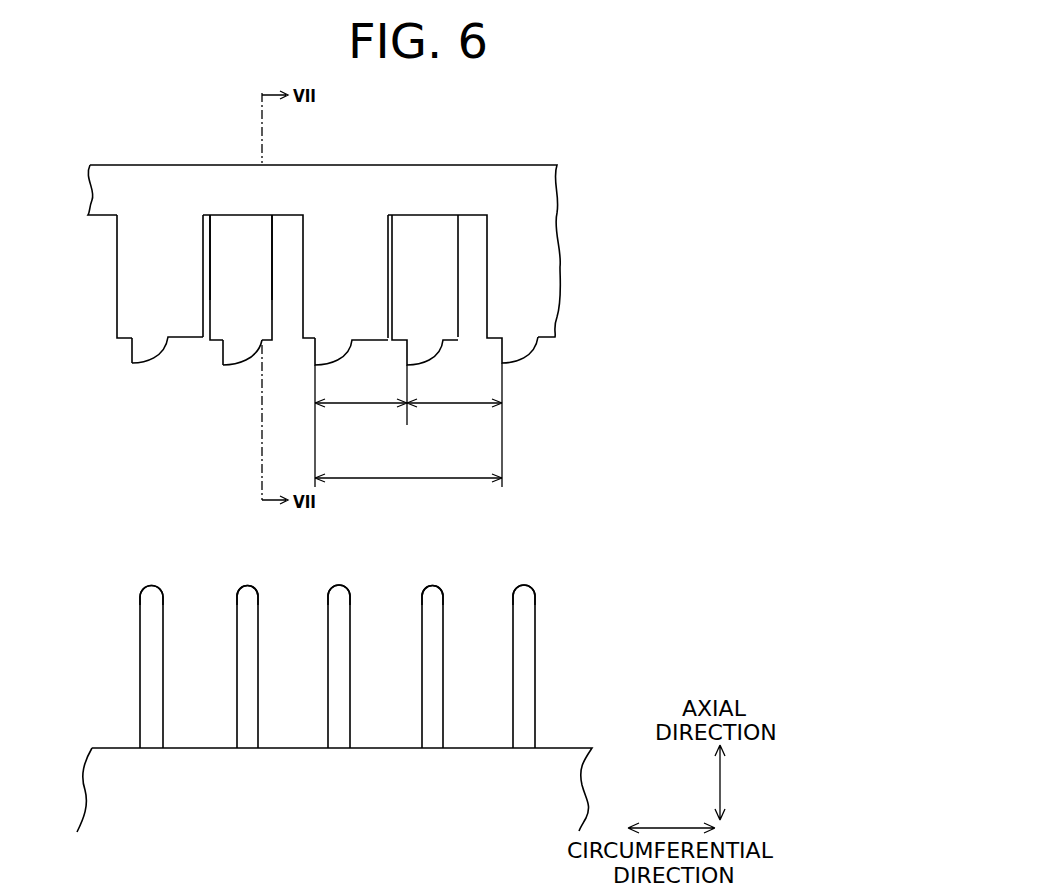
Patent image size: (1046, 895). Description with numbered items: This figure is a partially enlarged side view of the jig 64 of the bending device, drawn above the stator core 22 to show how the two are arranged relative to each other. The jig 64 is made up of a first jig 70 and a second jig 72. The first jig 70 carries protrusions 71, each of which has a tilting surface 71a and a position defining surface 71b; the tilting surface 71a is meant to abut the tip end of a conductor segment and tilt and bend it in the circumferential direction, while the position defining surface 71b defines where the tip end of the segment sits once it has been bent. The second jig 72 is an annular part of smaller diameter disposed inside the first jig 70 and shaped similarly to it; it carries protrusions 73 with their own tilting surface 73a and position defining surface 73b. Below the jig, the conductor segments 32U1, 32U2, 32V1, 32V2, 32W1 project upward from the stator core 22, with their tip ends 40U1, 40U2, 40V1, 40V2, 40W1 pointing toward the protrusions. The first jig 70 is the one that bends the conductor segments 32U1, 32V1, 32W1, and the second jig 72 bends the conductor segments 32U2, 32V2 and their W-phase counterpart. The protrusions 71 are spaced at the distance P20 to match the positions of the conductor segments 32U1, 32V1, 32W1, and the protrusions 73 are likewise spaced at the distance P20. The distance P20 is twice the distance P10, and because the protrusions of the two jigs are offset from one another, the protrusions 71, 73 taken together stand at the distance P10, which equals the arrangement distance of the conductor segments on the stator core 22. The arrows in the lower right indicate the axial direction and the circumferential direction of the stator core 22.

The jig 64 is at (450, 142).
The first jig 70 is at (152, 187).
The protrusion 71 is at (137, 370).
The tilting surface 71a is at (158, 360).
The position defining surface 71b is at (131, 355).
The second jig 72 is at (233, 232).
The protrusion 73 is at (225, 377).
The tilting surface 73a is at (250, 365).
The position defining surface 73b is at (222, 352).
The distance P10 is at (365, 403).
The distance P20 is at (413, 478).
The stator core 22 is at (570, 792).
The conductor segment 32U1 is at (140, 690).
The conductor segment 32U2 is at (237, 692).
The conductor segment 32V1 is at (328, 695).
The conductor segment 32V2 is at (422, 702).
The conductor segment 32W1 is at (513, 705).
The tip end 40U1 is at (148, 602).
The tip end 40U2 is at (243, 603).
The tip end 40V1 is at (333, 603).
The tip end 40V2 is at (428, 603).
The tip end 40W1 is at (522, 605).